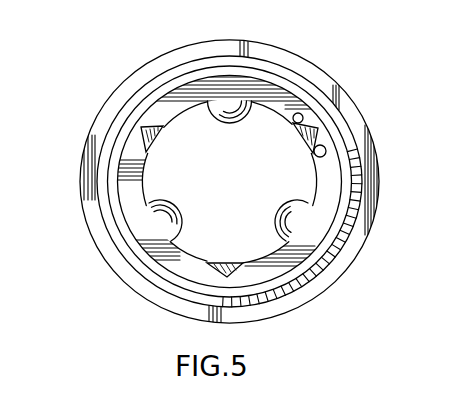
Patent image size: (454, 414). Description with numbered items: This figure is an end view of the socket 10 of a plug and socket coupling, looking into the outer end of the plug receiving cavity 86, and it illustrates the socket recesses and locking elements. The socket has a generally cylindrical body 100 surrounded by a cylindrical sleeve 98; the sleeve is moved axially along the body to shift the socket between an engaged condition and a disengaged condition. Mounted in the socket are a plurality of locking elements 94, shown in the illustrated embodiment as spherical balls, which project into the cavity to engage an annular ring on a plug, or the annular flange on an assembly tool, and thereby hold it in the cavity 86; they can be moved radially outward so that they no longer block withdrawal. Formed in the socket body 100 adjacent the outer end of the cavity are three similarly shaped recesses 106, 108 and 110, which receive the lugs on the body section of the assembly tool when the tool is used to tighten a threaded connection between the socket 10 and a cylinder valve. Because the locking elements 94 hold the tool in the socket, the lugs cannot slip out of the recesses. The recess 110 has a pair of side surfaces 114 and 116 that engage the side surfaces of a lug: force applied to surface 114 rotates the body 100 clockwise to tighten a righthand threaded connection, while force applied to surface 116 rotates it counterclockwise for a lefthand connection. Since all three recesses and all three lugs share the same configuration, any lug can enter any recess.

The socket 10 is at (80, 53).
The plug receiving cavity 86 is at (180, 176).
The locking elements 94 is at (233, 107).
The cylindrical sleeve 98 is at (372, 187).
The socket body 100 is at (175, 100).
The recess 106 is at (141, 127).
The recess 108 is at (193, 258).
The recess 110 is at (318, 128).
The side surface 114 is at (317, 160).
The side surface 116 is at (292, 126).